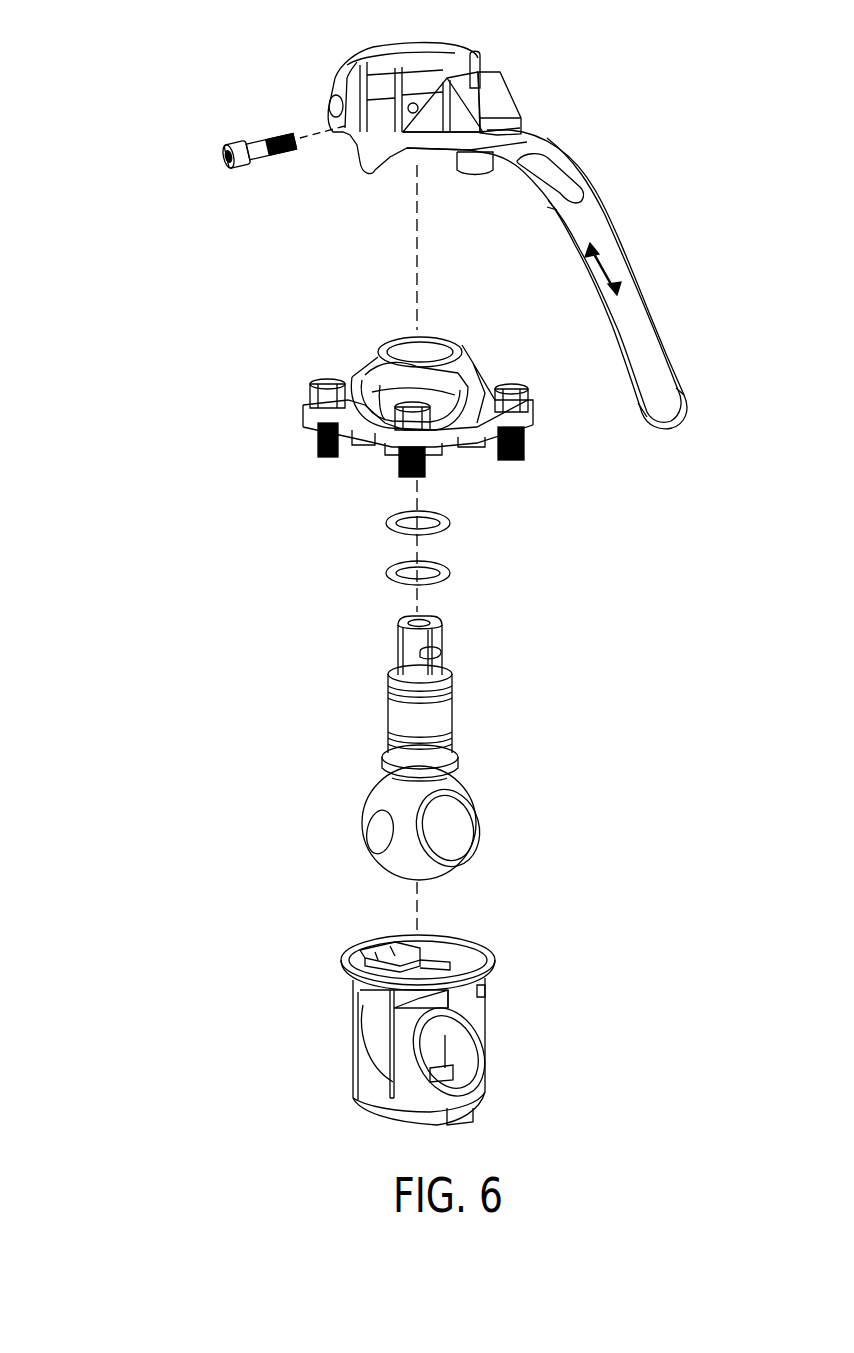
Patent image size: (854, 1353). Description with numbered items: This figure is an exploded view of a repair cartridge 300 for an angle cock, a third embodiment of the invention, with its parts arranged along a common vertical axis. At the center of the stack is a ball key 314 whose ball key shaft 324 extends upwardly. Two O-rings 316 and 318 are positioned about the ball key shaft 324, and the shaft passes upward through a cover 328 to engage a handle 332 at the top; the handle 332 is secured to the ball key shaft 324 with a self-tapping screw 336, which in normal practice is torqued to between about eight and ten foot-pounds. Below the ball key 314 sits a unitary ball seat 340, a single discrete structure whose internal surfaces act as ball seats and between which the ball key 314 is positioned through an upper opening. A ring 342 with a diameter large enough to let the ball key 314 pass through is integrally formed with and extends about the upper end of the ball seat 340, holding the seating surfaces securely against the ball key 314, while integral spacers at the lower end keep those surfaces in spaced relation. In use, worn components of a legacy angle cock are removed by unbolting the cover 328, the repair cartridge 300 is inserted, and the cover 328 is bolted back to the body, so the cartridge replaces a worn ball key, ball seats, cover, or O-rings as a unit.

The repair cartridge 300 is at (128, 108).
The self-tapping screw 336 is at (260, 160).
The handle 332 is at (573, 275).
The cover 328 is at (535, 420).
The O-ring 318 is at (388, 522).
The O-ring 316 is at (388, 573).
The ball key shaft 324 is at (452, 705).
The ball key 314 is at (383, 753).
The unitary ball seat 340 is at (487, 998).
The cage ring 342 is at (493, 955).